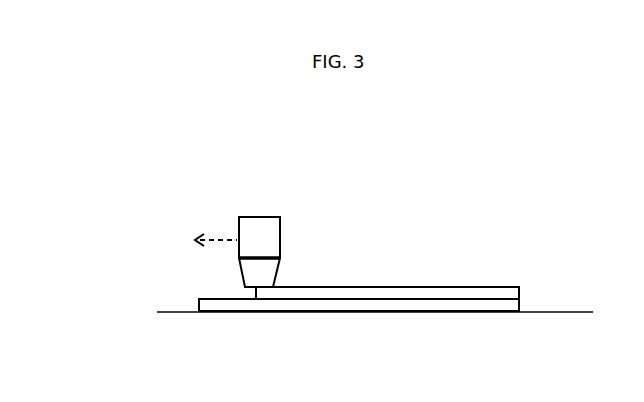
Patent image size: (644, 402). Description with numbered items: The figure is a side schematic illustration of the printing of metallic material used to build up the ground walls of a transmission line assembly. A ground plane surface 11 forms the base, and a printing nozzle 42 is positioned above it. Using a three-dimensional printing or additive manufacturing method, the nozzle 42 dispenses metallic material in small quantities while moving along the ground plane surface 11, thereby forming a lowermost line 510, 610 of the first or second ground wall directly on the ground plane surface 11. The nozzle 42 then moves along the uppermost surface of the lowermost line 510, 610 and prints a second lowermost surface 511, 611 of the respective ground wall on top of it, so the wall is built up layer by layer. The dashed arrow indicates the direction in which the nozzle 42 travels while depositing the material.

The ground plane surface 11 is at (170, 312).
The printing nozzle 42 is at (280, 240).
The lowermost line of the first ground wall 510 is at (421, 288).
The lowermost line of the second ground wall 610 is at (519, 306).
The second lowermost surface of the first ground wall 511 is at (421, 255).
The second lowermost surface of the second ground wall 611 is at (493, 287).